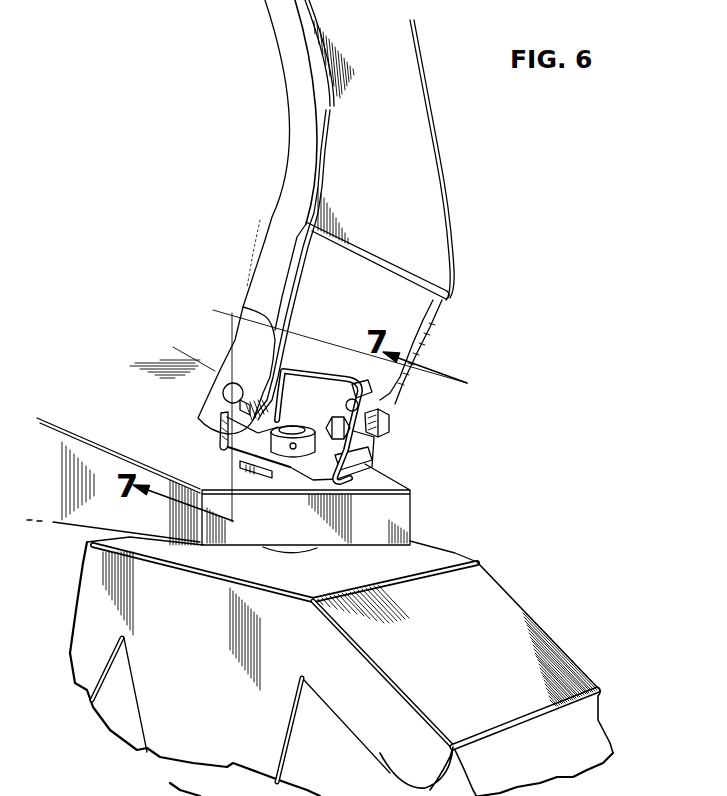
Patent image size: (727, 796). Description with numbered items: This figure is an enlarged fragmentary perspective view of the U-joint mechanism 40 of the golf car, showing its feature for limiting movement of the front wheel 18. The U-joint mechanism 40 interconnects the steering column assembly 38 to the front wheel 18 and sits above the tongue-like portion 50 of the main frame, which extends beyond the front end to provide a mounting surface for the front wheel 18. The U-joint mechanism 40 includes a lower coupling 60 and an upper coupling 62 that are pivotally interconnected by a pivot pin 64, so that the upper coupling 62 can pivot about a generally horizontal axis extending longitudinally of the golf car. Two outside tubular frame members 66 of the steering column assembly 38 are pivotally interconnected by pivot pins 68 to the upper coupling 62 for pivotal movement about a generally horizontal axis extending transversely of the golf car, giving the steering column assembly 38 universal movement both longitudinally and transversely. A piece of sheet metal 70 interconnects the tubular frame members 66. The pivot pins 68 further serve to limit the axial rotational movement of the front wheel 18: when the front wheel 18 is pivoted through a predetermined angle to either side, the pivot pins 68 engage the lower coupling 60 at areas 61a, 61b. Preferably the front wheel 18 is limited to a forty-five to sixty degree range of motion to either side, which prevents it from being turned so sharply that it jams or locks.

The front wheel 18 is at (593, 740).
The steering column assembly 38 is at (409, 162).
The U-joint mechanism 40 is at (328, 370).
The tongue-like portion 50 is at (390, 518).
The lower coupling 60 is at (226, 449).
The engagement area 61a is at (268, 470).
The engagement area 61b is at (360, 456).
The upper coupling 62 is at (362, 388).
The pivot pin 64 is at (379, 427).
The tubular frame members 66 is at (288, 72).
The pivot pins 68 is at (227, 394).
The sheet metal 70 is at (415, 90).